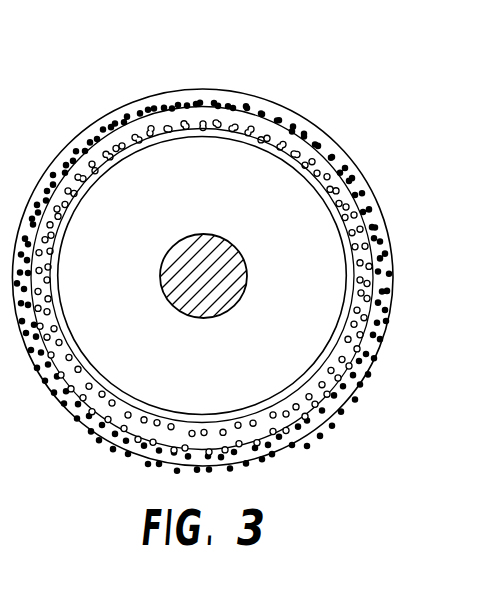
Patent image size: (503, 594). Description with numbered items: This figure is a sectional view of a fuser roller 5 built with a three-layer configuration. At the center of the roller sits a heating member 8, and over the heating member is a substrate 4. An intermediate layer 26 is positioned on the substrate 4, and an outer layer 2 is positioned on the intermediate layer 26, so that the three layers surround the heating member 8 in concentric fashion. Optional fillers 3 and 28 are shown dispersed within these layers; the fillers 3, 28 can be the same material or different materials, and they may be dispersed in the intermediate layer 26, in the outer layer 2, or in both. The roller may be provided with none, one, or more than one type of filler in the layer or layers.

The fuser roller 5 is at (81, 45).
The outer layer 2 is at (95, 128).
The filler 3 is at (313, 148).
The substrate 4 is at (75, 197).
The heating member 8 is at (205, 233).
The intermediate layer 26 is at (337, 180).
The filler 28 is at (383, 267).